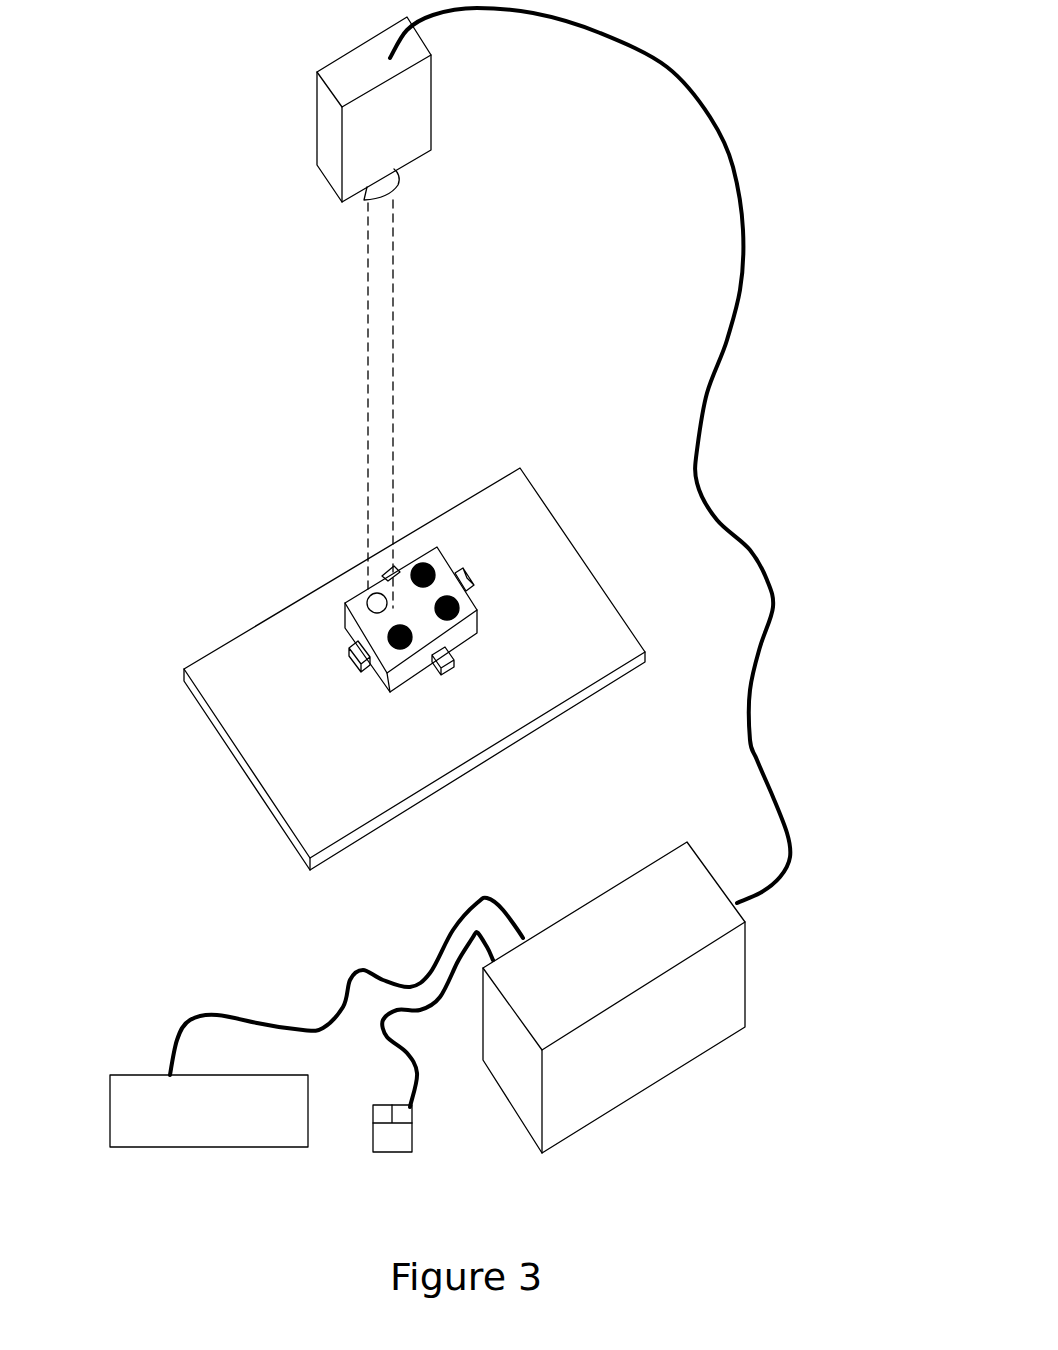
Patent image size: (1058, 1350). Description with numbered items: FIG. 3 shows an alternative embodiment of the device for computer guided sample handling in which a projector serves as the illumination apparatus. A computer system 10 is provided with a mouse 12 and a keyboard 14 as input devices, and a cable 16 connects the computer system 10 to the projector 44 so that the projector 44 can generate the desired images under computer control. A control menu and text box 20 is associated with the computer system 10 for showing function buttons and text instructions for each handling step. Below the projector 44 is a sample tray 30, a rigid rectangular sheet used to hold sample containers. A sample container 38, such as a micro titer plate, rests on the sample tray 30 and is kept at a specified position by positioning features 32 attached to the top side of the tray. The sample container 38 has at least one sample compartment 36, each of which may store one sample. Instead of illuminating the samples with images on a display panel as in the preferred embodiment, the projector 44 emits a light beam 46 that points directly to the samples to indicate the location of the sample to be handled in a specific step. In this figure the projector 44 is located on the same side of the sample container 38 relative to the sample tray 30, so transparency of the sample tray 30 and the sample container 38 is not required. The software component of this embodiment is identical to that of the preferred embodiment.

The computer system 10 is at (642, 1050).
The mouse 12 is at (390, 1152).
The keyboard 14 is at (140, 1100).
The cable 16 is at (777, 798).
The control menu and text box 20 is at (346, 986).
The sample tray 30 is at (590, 693).
The positioning feature 32 is at (393, 567).
The sample compartment 36 is at (347, 638).
The sample container 38 is at (473, 603).
The projector 44 is at (317, 123).
The light beam 46 is at (363, 348).